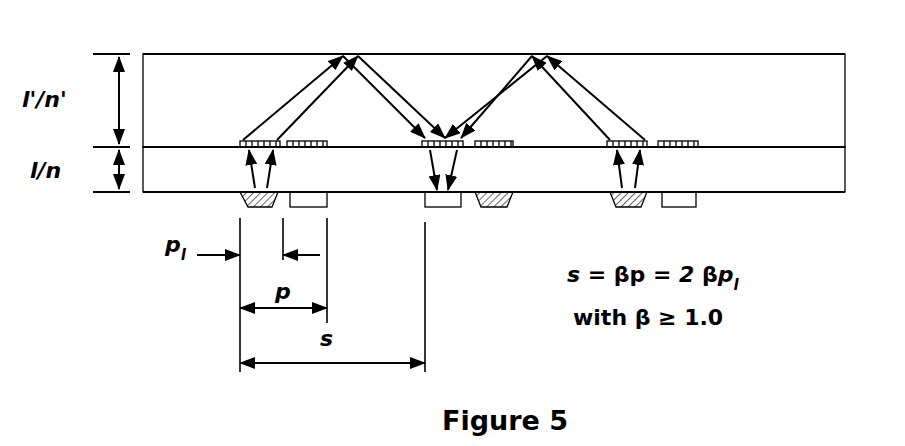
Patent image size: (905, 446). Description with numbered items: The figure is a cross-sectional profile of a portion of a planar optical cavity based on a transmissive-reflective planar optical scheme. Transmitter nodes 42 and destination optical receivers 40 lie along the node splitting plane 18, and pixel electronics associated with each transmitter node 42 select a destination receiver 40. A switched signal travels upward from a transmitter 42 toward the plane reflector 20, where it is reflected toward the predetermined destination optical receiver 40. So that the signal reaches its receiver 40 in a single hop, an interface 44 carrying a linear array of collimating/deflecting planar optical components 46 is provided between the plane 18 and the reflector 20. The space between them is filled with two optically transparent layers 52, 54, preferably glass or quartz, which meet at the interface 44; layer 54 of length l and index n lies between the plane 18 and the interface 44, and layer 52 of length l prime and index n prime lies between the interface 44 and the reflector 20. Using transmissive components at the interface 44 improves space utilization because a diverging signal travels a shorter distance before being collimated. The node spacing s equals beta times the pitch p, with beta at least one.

The node splitting plane 18 is at (793, 195).
The plane reflector 20 is at (698, 54).
The destination optical receiver 40 is at (440, 208).
The transmitter node 42 is at (487, 207).
The interface 44 is at (755, 148).
The collimating/deflecting planar optical components 46 is at (644, 140).
The layer 52 is at (847, 92).
The layer 54 is at (847, 172).